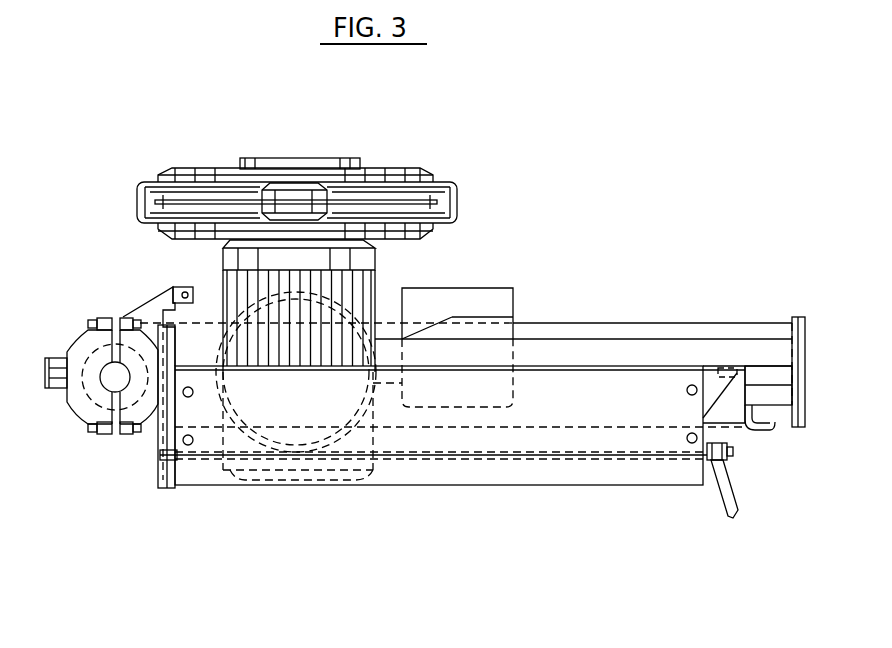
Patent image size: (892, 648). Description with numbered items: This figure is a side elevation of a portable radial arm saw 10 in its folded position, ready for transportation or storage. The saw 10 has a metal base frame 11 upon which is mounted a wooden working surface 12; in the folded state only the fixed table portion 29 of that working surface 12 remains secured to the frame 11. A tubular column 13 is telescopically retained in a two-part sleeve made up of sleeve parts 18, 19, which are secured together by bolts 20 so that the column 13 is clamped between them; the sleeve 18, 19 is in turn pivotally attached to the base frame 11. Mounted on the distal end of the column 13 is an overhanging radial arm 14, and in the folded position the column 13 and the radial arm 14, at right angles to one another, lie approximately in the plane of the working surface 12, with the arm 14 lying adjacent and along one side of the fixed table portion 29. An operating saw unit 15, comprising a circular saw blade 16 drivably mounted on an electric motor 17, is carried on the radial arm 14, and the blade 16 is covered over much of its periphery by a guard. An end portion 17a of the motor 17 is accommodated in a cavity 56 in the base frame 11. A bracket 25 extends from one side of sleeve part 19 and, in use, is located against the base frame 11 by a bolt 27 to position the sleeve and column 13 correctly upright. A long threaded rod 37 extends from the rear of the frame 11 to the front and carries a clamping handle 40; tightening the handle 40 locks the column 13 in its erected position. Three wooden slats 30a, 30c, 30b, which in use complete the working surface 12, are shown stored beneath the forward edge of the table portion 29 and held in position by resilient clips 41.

The radial arm saw 10 is at (532, 238).
The base frame 11 is at (472, 494).
The working surface 12 is at (597, 329).
The column 13 is at (80, 407).
The radial arm 14 is at (535, 325).
The operating saw unit 15 is at (402, 156).
The circular saw blade 16 is at (453, 192).
The electric motor 17 is at (352, 283).
The end portion of the motor 17a is at (273, 478).
The sleeve part 18 is at (90, 362).
The sleeve part 19 is at (125, 318).
The bolts 20 is at (88, 320).
The bracket 25 is at (163, 300).
The bolt 27 is at (185, 290).
The table portion 29 is at (724, 353).
The wooden slat 30a is at (768, 375).
The wooden slat 30b is at (758, 412).
The wooden slat 30c is at (775, 392).
The rod 37 is at (587, 460).
The clamping handle 40 is at (720, 483).
The resilient clips 41 is at (745, 430).
The cavity 56 is at (380, 411).